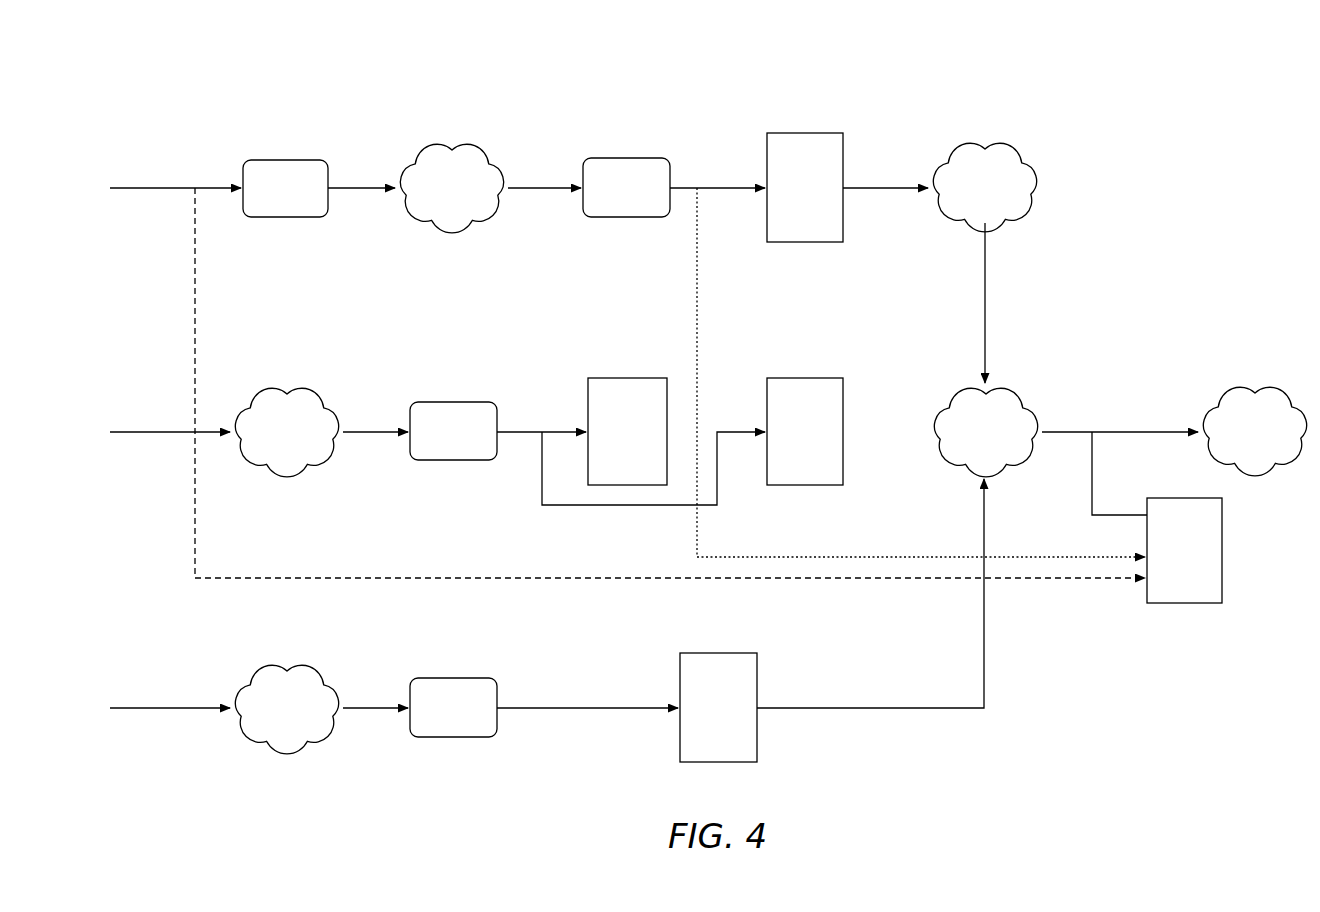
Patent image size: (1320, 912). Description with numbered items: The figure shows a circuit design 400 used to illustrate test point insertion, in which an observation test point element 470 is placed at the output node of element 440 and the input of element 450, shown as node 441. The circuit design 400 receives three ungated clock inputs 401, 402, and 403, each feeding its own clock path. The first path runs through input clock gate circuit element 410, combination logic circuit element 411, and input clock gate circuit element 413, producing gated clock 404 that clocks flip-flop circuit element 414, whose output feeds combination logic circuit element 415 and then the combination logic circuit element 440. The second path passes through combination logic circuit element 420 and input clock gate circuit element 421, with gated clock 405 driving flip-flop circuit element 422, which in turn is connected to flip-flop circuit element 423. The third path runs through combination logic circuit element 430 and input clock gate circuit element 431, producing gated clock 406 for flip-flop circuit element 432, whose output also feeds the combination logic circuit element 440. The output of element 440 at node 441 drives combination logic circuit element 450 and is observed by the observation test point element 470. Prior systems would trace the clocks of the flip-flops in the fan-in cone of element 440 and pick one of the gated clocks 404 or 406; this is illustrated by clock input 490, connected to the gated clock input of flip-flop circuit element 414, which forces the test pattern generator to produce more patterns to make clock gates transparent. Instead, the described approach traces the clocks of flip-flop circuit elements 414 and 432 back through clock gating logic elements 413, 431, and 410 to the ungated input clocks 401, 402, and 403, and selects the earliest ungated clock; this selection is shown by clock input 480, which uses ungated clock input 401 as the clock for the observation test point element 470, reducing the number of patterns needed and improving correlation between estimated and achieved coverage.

The circuit design 400 is at (192, 50).
The ungated clock input 401 is at (137, 190).
The ungated clock input 402 is at (137, 434).
The ungated clock input 403 is at (137, 710).
The gated clock 404 is at (733, 186).
The gated clock 2 405 is at (558, 430).
The gated clock 406 is at (642, 706).
The input clock gate circuit element 410 is at (284, 159).
The combination logic circuit element 411 is at (452, 140).
The input clock gate circuit element 413 is at (624, 158).
The flip-flop circuit element 414 is at (805, 133).
The combination logic circuit element 415 is at (986, 142).
The combination logic circuit element 420 is at (287, 385).
The input clock gate circuit element 421 is at (453, 402).
The flip-flop circuit element 422 is at (627, 378).
The flip-flop circuit element 423 is at (805, 378).
The combination logic circuit element 430 is at (287, 662).
The input clock gate circuit element 431 is at (453, 678).
The flip-flop circuit element 432 is at (718, 653).
The combination logic circuit element 440 is at (1012, 390).
The node 441 is at (1075, 432).
The combination logic circuit element 450 is at (1256, 382).
The observation test point element 470 is at (1222, 550).
The clock input 480 is at (195, 306).
The clock input 490 is at (700, 282).